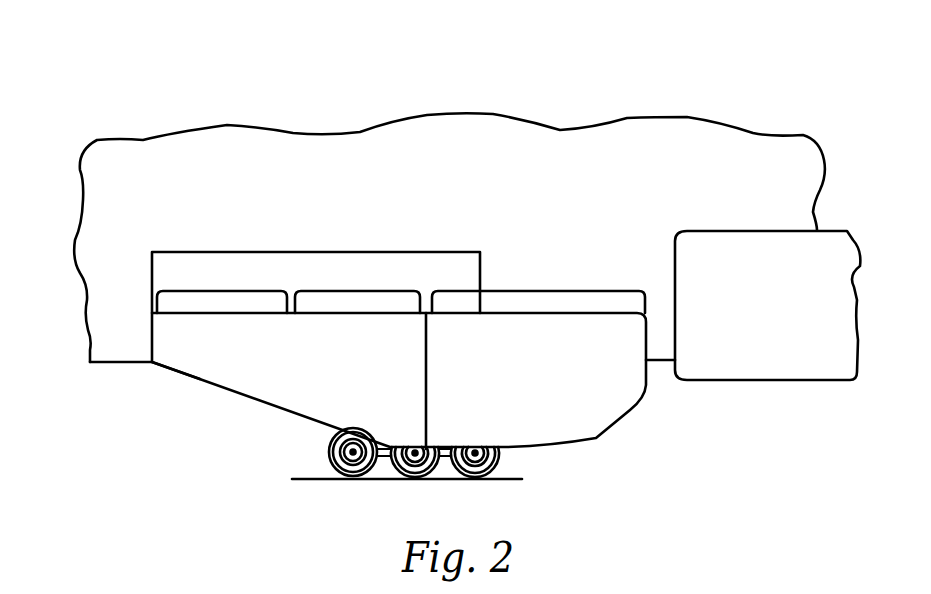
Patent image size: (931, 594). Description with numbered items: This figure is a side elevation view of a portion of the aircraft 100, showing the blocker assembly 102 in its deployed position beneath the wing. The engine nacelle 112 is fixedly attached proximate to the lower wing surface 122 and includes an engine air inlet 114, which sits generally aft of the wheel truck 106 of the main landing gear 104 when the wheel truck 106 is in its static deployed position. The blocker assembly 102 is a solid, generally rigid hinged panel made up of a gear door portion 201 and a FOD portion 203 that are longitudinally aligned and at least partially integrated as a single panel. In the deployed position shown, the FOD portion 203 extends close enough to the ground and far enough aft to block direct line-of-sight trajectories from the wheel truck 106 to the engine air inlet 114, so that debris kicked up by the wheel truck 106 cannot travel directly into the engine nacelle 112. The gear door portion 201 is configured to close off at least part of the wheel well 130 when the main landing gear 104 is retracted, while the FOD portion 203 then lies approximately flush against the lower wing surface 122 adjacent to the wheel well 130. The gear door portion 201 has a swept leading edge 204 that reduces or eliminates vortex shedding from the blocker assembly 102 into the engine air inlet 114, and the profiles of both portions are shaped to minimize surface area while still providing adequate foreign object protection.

The aircraft 100 is at (318, 95).
The blocker assembly 102 is at (230, 394).
The main landing gear 104 is at (520, 465).
The wheel truck 106 is at (328, 453).
The engine nacelle 112 is at (790, 319).
The engine air inlet 114 is at (673, 274).
The lower wing surface 122 is at (102, 273).
The wheel well 130 is at (225, 265).
The gear door portion 201 is at (291, 288).
The FOD portion 203 is at (535, 290).
The swept leading edge 204 is at (178, 373).